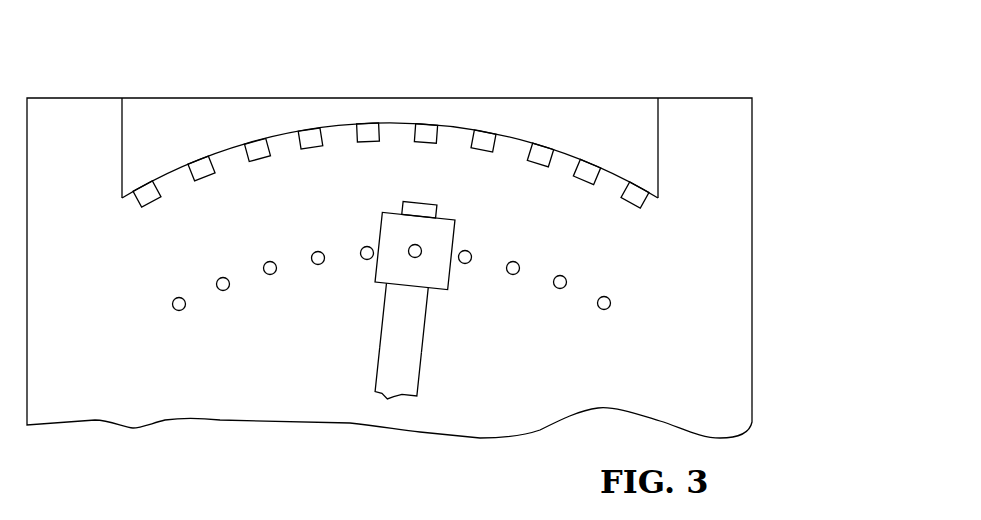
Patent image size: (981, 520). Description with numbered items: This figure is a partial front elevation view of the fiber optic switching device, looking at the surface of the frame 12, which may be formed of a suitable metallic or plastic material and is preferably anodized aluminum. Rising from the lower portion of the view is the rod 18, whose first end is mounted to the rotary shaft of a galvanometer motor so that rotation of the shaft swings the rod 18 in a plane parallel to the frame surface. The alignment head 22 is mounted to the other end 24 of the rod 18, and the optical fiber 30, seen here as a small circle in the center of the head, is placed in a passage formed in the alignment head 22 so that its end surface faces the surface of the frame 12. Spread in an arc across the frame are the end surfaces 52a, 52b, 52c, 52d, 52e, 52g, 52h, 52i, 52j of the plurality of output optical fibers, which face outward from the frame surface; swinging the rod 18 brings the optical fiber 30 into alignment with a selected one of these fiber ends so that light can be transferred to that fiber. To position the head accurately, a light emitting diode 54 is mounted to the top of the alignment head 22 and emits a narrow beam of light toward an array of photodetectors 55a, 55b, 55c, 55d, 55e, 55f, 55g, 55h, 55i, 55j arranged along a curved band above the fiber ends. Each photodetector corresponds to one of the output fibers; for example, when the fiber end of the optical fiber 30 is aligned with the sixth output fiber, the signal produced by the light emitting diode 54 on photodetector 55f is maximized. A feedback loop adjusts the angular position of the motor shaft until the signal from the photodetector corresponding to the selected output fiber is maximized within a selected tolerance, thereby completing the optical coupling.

The frame 12 is at (752, 153).
The rod 18 is at (418, 378).
The alignment head 22 is at (368, 273).
The other end of the rod 24 is at (428, 302).
The optical fiber 30 is at (416, 258).
The end surface 52a is at (178, 310).
The end surface 52b is at (222, 290).
The end surface 52c is at (266, 262).
The end surface 52d is at (313, 253).
The end surface 52e is at (366, 247).
The end surface 52g is at (466, 251).
The end surface 52h is at (516, 262).
The end surface 52i is at (565, 278).
The end surface 52j is at (606, 309).
The light emitting diode 54 is at (420, 199).
The photodetector 55a is at (140, 205).
The photodetector 55b is at (202, 158).
The photodetector 55c is at (258, 142).
The photodetector 55d is at (309, 130).
The photodetector 55e is at (368, 124).
The photodetector 55f is at (425, 125).
The photodetector 55g is at (483, 132).
The photodetector 55h is at (538, 148).
The photodetector 55i is at (590, 164).
The photodetector 55j is at (648, 208).